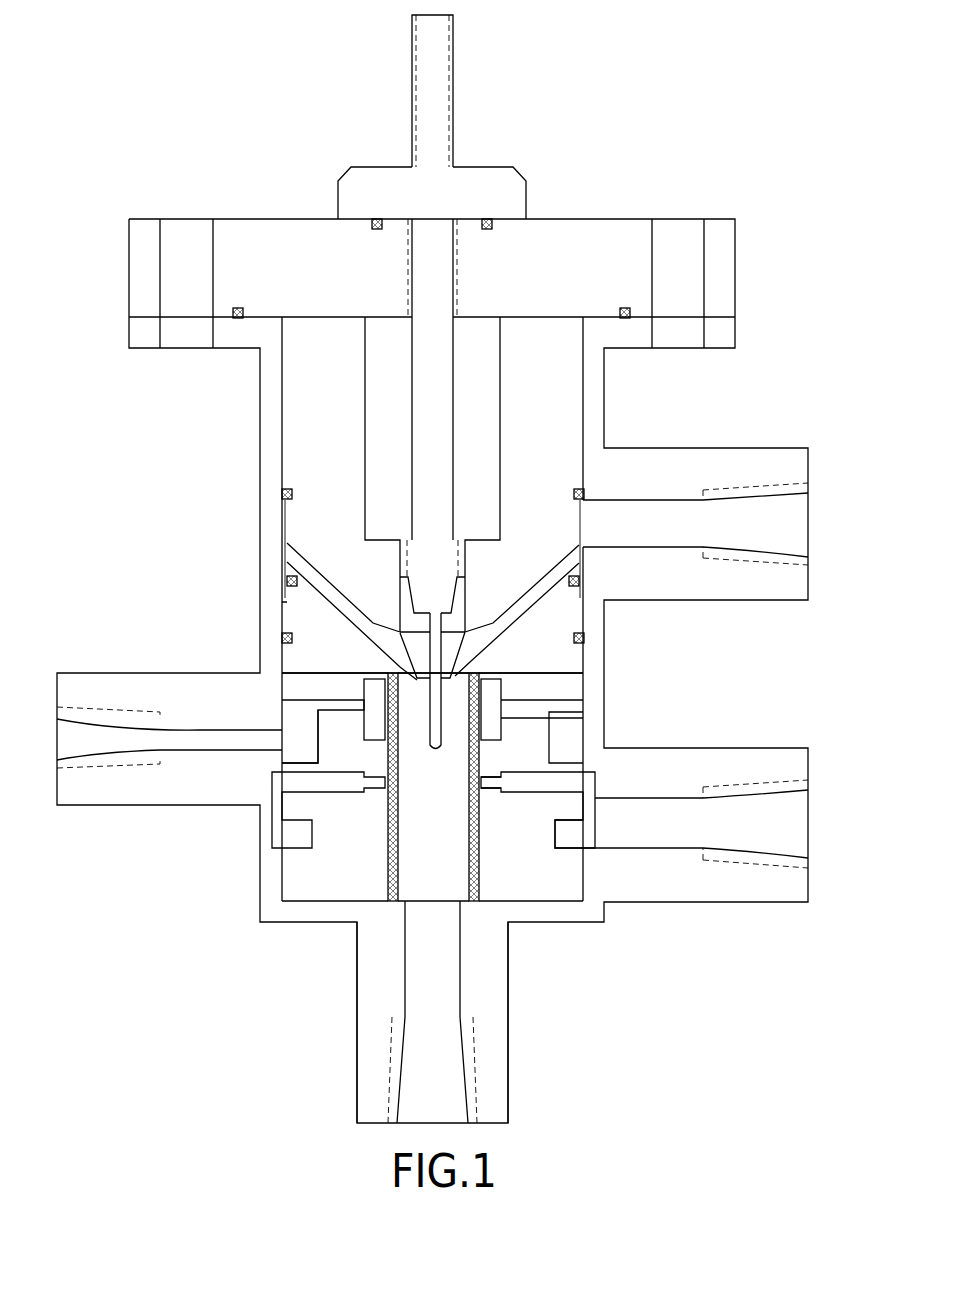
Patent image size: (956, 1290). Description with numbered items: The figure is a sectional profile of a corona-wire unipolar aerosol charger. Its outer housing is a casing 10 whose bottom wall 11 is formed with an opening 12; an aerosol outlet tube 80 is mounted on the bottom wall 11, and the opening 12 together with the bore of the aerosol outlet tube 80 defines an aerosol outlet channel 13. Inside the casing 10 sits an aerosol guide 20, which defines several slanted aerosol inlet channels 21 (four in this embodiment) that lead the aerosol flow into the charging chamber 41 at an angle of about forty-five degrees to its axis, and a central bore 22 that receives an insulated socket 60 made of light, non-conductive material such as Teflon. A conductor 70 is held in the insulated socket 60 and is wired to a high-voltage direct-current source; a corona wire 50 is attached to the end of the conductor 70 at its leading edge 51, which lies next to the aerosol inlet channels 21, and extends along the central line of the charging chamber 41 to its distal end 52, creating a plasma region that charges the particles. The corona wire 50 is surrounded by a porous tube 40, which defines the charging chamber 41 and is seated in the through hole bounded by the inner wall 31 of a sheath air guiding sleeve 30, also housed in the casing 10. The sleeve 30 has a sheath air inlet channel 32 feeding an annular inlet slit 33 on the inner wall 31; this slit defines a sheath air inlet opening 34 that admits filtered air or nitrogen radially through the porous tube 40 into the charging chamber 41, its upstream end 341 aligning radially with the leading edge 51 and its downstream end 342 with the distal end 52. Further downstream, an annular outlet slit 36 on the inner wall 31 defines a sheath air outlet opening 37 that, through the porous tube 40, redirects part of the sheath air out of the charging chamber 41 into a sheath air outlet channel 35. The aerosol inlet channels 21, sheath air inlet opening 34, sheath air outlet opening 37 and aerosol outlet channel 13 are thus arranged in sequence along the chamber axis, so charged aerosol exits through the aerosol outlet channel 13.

The casing 10 is at (272, 460).
The bottom wall 11 is at (340, 917).
The opening 12 is at (430, 910).
The aerosol outlet channel 13 is at (438, 1048).
The aerosol guide 20 is at (538, 410).
The aerosol inlet channel 21 is at (322, 585).
The central bore 22 is at (403, 565).
The sheath air guiding sleeve 30 is at (305, 875).
The inner wall 31 is at (357, 865).
The sheath air inlet channel 32 is at (320, 706).
The annular inlet slit 33 is at (335, 745).
The sheath air inlet opening 34 is at (325, 735).
The sheath air outlet channel 35 is at (540, 783).
The annular outlet slit 36 is at (493, 780).
The sheath air outlet opening 37 is at (485, 790).
The porous tube 40 is at (395, 870).
The charging chamber 41 is at (430, 840).
The corona wire 50 is at (445, 725).
The leading edge 51 is at (470, 668).
The distal end 52 is at (470, 750).
The insulated socket 60 is at (453, 615).
The conductor 70 is at (425, 428).
The aerosol outlet tube 80 is at (368, 1090).
The upstream end 341 is at (365, 690).
The downstream end 342 is at (330, 775).